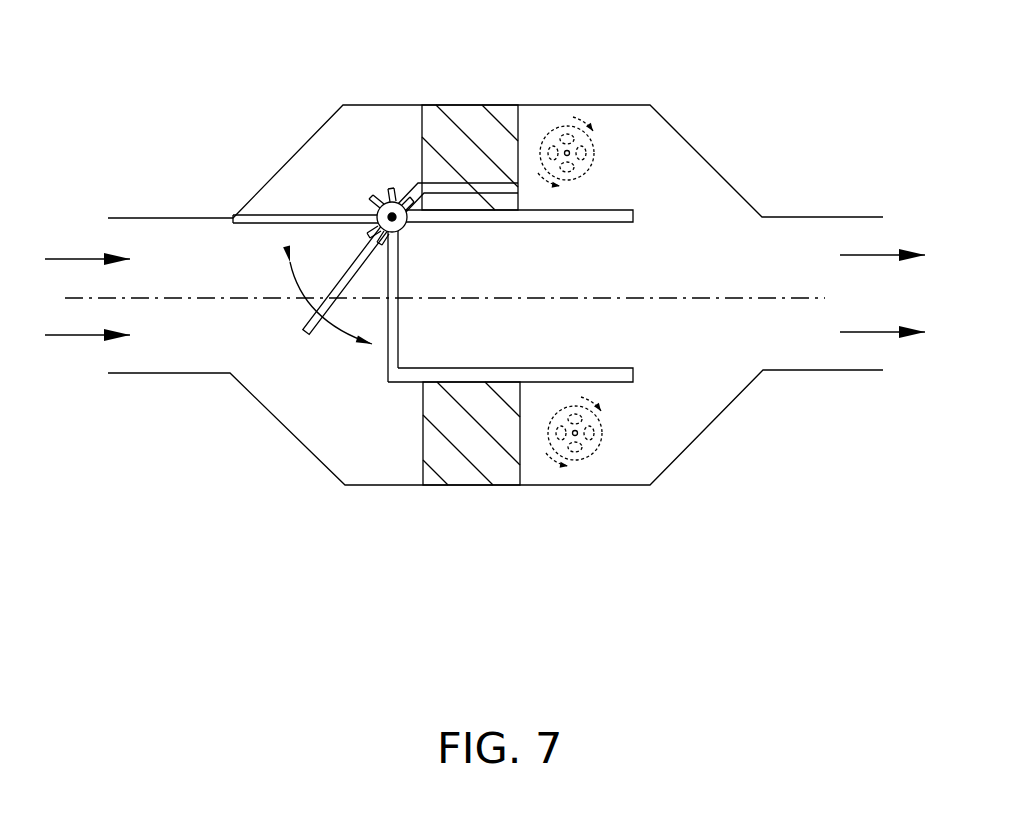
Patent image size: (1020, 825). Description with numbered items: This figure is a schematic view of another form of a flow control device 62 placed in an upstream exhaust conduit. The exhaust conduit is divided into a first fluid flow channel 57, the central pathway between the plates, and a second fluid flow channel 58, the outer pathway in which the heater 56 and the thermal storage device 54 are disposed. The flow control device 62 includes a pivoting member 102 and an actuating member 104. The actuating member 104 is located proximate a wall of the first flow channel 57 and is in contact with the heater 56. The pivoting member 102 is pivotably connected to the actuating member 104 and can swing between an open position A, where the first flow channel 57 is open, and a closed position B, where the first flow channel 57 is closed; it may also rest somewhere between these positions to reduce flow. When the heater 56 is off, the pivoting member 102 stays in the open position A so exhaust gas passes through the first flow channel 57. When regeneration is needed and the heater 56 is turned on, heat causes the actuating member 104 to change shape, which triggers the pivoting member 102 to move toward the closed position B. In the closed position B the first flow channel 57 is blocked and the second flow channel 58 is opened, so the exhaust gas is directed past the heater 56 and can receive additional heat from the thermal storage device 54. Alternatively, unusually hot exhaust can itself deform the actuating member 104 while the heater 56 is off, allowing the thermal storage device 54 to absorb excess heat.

The open position A is at (295, 207).
The closed position B is at (385, 352).
The pivoting member 102 is at (380, 205).
The actuating member 104 is at (493, 182).
The heater 56 is at (487, 102).
The thermal storage device 54 is at (576, 122).
The flow control device 62 is at (617, 190).
The second fluid flow channel 58 is at (653, 165).
The first fluid flow channel 57 is at (662, 329).